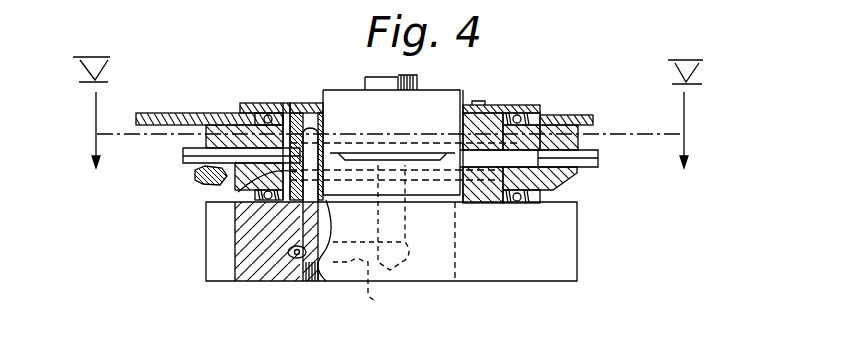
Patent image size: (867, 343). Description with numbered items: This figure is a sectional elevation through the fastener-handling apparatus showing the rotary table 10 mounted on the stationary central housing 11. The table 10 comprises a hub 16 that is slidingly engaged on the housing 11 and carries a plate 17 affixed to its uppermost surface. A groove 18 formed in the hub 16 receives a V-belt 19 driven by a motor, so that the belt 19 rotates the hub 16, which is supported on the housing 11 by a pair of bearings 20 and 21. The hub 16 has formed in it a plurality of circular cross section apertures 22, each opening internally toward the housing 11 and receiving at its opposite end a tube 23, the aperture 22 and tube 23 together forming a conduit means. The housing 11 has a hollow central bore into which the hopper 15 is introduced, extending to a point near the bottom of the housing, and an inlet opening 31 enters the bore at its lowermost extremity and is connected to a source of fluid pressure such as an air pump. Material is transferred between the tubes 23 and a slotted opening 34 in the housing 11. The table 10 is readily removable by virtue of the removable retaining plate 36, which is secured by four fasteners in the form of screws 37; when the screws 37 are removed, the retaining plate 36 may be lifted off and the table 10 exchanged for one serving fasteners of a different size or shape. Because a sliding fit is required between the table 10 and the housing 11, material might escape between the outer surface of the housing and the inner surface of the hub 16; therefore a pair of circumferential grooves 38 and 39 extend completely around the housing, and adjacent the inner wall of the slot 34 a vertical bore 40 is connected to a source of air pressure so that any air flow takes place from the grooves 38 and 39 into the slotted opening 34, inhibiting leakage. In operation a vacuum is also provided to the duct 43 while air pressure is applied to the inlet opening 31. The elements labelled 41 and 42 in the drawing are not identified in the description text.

The table 10 is at (160, 112).
The central housing 11 is at (464, 90).
The hopper 15 is at (418, 82).
The hub 16 is at (585, 143).
The plate 17 is at (590, 113).
The groove 18 is at (563, 176).
The V-belt 19 is at (195, 176).
The bearing 20 is at (553, 116).
The bearing 21 is at (530, 198).
The aperture 22 is at (195, 158).
The tube 23 is at (185, 153).
The inlet opening 31 is at (367, 292).
The slotted opening 34 is at (211, 126).
The retaining plate 36 is at (548, 116).
The screw 37 is at (509, 112).
The circumferential groove 38 is at (288, 110).
The circumferential groove 39 is at (242, 197).
The vertical bore 40 is at (321, 281).
The bushing 41 is at (296, 113).
The recess 42 is at (312, 208).
The duct 43 is at (298, 259).